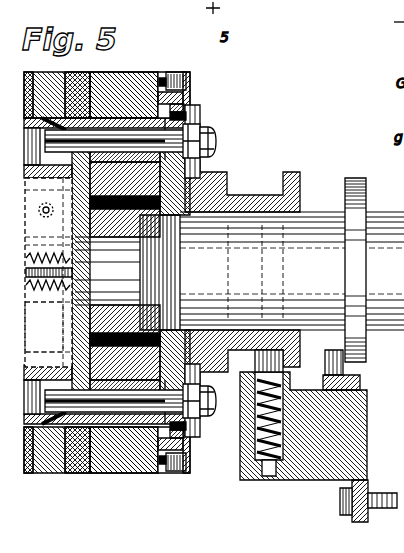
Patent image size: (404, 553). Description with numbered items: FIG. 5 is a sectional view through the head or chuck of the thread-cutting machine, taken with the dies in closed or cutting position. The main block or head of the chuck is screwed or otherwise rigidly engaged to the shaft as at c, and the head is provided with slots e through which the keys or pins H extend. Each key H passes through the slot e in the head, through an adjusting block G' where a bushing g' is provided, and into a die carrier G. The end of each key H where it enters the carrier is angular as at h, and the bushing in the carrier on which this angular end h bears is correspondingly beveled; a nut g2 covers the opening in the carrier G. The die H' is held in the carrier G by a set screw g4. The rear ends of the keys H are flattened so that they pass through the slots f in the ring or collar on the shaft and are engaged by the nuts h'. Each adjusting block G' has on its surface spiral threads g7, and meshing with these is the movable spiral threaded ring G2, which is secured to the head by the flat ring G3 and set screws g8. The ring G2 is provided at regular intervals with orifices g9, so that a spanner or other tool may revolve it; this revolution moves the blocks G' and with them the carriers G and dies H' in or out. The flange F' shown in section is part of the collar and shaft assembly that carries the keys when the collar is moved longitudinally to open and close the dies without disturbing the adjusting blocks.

The shaft engagement c is at (178, 268).
The flange F' is at (291, 319).
The die carrier G is at (107, 282).
The nut g2 is at (32, 102).
The adjusting block G' is at (103, 285).
The key H is at (124, 272).
The spiral threads g7 is at (162, 80).
The flat ring G3 is at (187, 75).
The set screws g8 is at (185, 82).
The spiral threaded ring G2 is at (198, 100).
The orifices g9 is at (187, 113).
The nuts h' is at (154, 264).
The slots f is at (204, 153).
The slots e is at (206, 133).
The bushing g' is at (125, 271).
The angular end h is at (48, 272).
The set screw g4 is at (47, 219).
The die H' is at (44, 327).